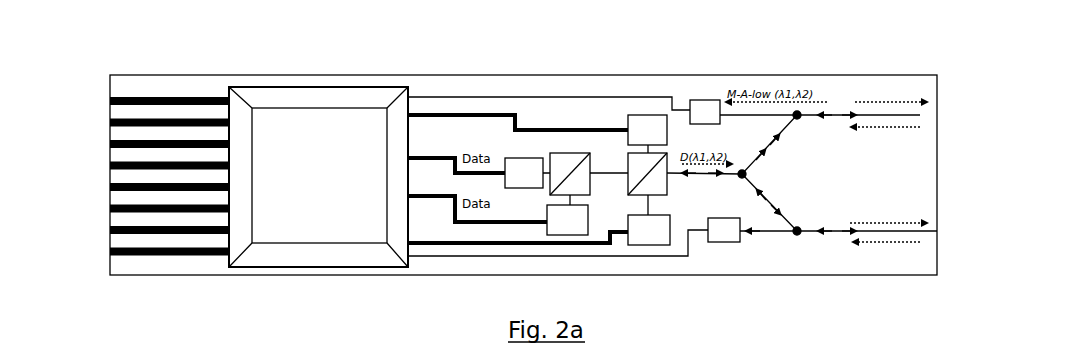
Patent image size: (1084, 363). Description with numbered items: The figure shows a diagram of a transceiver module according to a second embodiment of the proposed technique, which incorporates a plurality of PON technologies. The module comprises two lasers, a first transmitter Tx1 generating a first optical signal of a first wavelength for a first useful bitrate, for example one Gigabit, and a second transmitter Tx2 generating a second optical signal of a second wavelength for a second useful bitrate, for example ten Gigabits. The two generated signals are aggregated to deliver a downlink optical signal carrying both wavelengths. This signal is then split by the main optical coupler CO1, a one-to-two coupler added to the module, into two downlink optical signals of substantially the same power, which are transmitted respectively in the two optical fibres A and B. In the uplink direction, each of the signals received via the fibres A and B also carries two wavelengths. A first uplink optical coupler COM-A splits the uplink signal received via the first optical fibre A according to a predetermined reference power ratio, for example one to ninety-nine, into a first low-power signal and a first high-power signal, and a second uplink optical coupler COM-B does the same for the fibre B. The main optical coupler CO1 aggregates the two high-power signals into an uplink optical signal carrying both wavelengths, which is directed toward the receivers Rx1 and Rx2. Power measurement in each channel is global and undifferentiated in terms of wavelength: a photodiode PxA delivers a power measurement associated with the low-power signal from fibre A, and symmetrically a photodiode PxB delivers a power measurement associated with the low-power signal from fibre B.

The first transmitter Tx1 is at (524, 173).
The second transmitter Tx2 is at (647, 130).
The first receiver Rx1 is at (567, 220).
The second receiver Rx2 is at (649, 230).
The first power measurement photodiode PxA is at (705, 112).
The second power measurement photodiode PxB is at (724, 230).
The main optical coupler CO1 is at (769, 173).
The first uplink optical coupler COM-A is at (797, 115).
The second uplink optical coupler COM-B is at (797, 231).
The first optical fibre A is at (876, 118).
The second optical fibre B is at (876, 235).